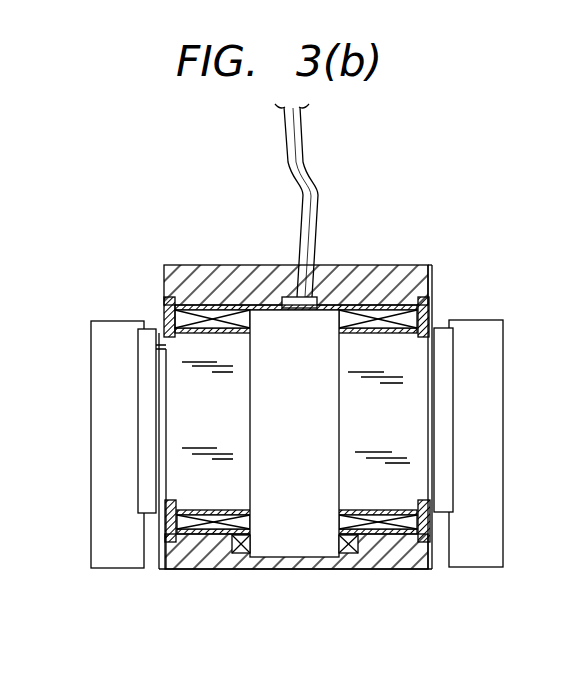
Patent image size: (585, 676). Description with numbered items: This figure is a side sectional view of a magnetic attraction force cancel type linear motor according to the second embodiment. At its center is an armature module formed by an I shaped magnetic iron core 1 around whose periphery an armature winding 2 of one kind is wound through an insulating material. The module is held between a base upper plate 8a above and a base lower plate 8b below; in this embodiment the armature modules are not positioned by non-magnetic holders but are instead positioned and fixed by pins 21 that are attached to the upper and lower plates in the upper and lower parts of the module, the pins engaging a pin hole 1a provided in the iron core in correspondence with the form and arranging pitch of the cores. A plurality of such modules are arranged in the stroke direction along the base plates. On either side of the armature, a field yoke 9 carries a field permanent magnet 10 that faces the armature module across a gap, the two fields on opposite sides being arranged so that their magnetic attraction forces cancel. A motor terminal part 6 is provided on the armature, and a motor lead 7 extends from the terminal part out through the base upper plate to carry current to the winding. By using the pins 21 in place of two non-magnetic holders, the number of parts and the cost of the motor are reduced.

The I shaped magnetic iron core 1 is at (176, 410).
The pin hole 1a is at (150, 337).
The armature winding 2 is at (205, 306).
The motor terminal part 6 is at (310, 545).
The motor lead 7 is at (300, 136).
The base upper plate 8a is at (372, 270).
The base lower plate 8b is at (200, 575).
The field yoke 9 is at (104, 333).
The field permanent magnet 10 is at (148, 387).
The pin 21 is at (432, 312).